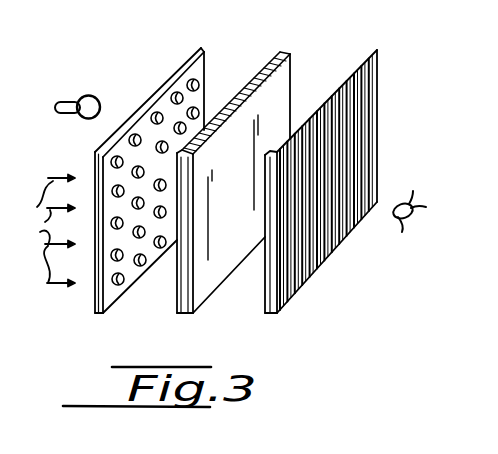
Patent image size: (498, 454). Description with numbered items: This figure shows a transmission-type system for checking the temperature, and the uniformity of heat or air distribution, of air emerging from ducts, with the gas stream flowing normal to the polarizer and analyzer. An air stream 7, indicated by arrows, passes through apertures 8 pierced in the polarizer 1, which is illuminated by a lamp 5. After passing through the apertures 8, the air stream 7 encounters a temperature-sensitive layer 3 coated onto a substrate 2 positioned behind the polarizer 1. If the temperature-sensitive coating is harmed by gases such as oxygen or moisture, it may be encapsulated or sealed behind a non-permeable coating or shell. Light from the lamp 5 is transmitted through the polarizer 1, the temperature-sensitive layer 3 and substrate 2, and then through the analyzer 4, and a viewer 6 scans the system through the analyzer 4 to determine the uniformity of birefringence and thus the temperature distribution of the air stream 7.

The polarizer 1 is at (204, 48).
The substrate 2 is at (290, 53).
The temperature-sensitive layer 3 is at (279, 53).
The analyzer 4 is at (377, 50).
The lamp 5 is at (77, 107).
The viewer 6 is at (411, 200).
The air stream 7 is at (50, 231).
The apertures 8 is at (137, 134).